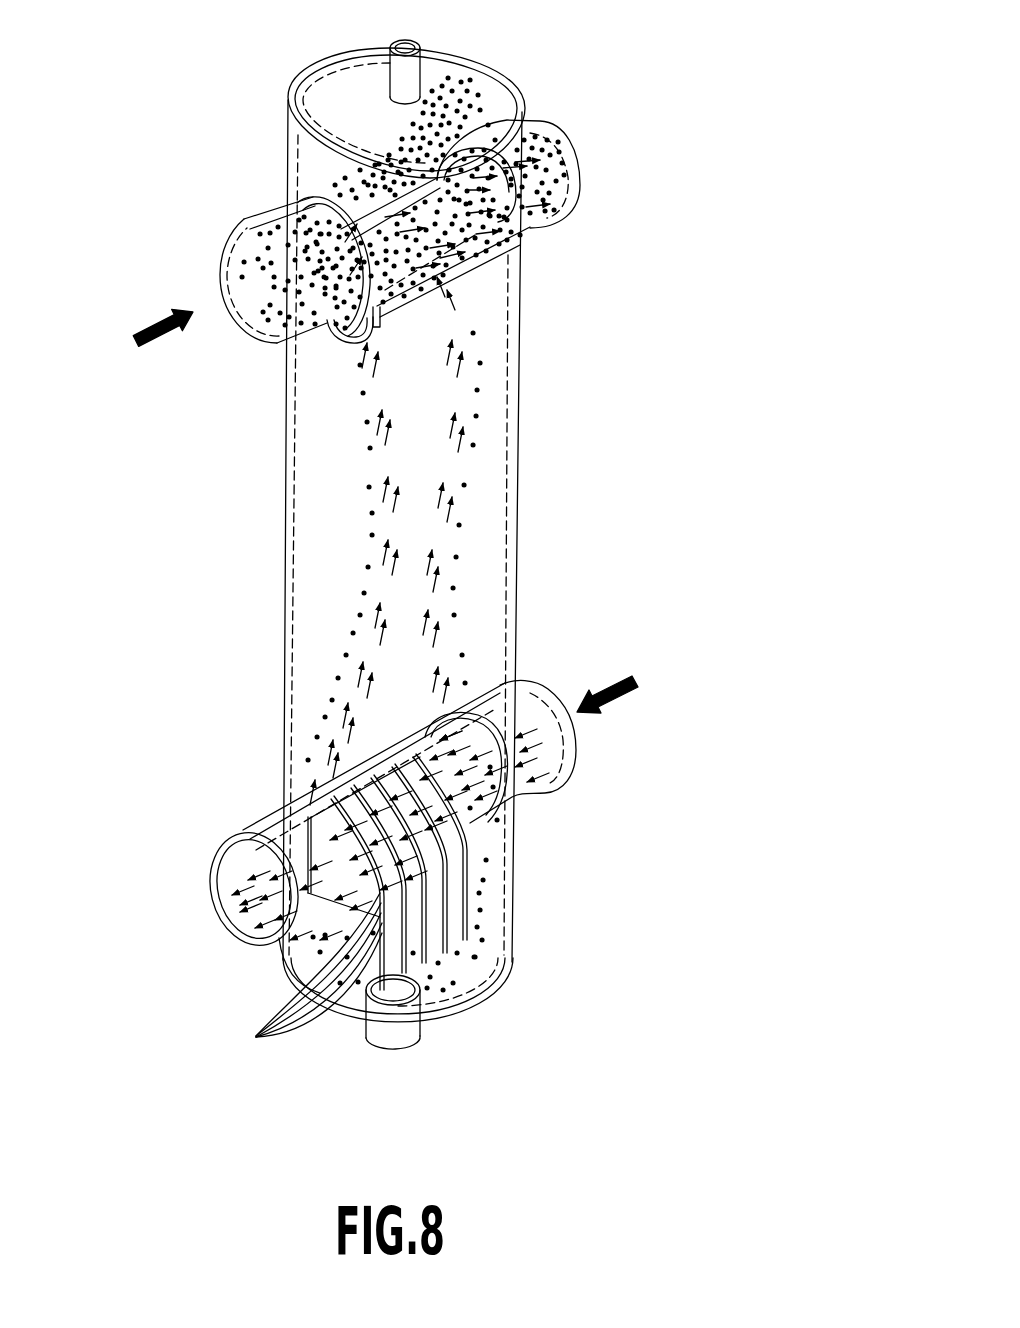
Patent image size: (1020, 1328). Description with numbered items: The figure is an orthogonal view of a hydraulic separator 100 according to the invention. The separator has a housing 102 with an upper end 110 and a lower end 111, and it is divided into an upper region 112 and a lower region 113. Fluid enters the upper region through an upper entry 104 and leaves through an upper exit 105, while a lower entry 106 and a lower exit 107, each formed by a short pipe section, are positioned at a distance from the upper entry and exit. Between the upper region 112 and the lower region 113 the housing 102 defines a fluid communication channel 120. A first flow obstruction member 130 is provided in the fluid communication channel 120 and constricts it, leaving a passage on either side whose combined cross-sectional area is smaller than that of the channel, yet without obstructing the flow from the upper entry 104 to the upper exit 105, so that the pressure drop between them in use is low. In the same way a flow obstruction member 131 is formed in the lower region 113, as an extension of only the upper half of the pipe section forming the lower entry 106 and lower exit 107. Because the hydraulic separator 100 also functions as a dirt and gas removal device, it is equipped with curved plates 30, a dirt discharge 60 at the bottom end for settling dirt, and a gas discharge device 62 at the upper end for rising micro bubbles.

The hydraulic separator 100 is at (652, 397).
The housing 102 is at (287, 526).
The upper entry 104 is at (223, 252).
The upper exit 105 is at (552, 134).
The lower entry 106 is at (527, 682).
The lower exit 107 is at (223, 830).
The upper end 110 is at (297, 90).
The lower end 111 is at (468, 973).
The upper region 112 is at (546, 264).
The lower region 113 is at (634, 848).
The fluid communication channel 120 is at (350, 476).
The first flow obstruction member 130 is at (327, 325).
The flow obstruction member 131 is at (307, 787).
The curved plates 30 is at (306, 972).
The dirt discharge 60 is at (366, 1036).
The gas discharge device 62 is at (423, 48).